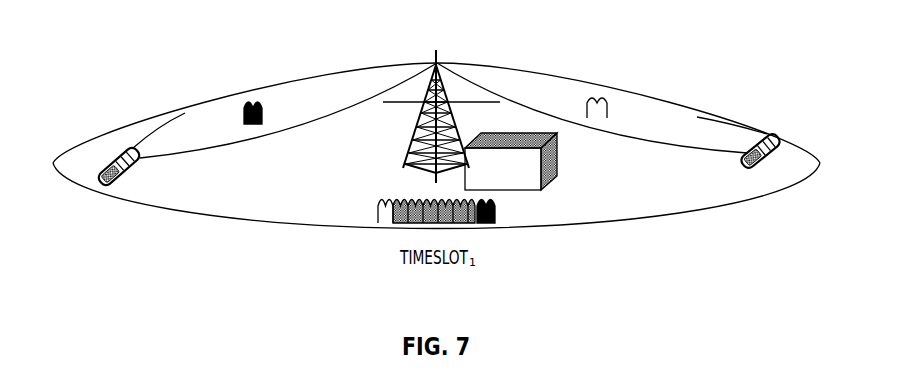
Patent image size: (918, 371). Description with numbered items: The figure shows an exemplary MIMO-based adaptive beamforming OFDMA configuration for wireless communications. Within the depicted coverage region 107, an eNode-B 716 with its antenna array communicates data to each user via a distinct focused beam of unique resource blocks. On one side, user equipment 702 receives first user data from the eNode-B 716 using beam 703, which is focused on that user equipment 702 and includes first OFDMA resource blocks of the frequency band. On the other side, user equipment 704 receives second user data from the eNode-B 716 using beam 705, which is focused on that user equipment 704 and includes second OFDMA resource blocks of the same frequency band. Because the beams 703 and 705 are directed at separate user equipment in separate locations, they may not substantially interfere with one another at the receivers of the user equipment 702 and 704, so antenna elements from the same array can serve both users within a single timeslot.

The cell coverage area 107 is at (807, 143).
The user equipment 702 is at (122, 147).
The beam 703 is at (315, 73).
The user equipment 704 is at (768, 130).
The beam 705 is at (587, 82).
The eNode-B 716 is at (557, 153).